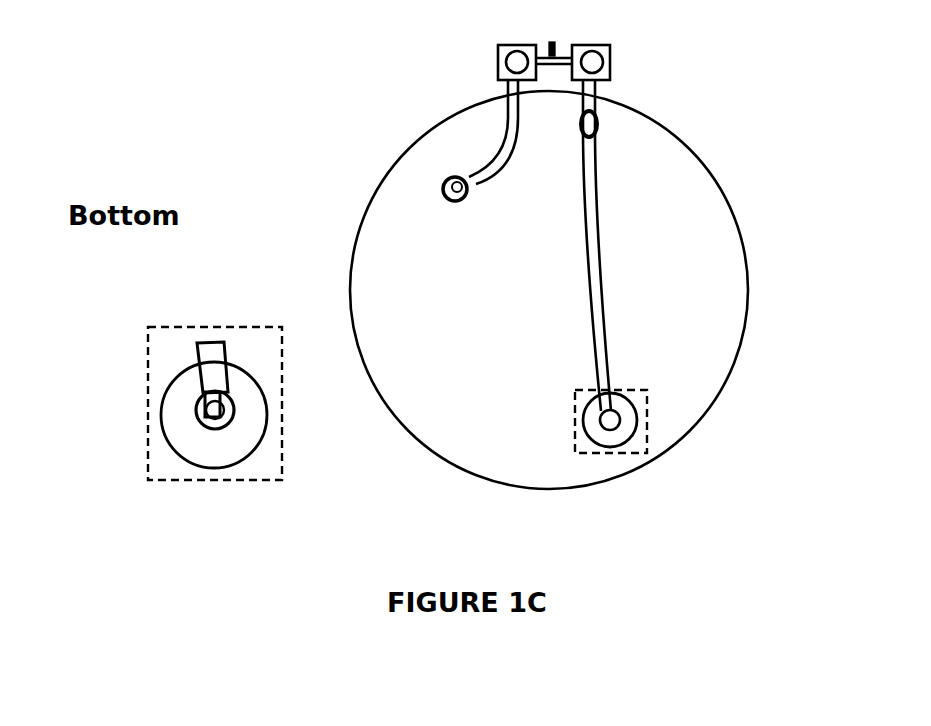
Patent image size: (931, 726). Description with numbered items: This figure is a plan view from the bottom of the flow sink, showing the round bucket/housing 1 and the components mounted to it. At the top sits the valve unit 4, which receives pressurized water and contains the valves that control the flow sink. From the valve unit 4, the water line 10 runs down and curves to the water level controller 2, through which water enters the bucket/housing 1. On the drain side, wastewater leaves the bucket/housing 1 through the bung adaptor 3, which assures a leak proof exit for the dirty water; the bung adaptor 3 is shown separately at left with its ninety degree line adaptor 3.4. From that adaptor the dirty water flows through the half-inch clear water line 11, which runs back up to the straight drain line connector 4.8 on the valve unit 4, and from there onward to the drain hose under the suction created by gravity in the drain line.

The bucket/housing 1 is at (712, 422).
The water level controller 2 is at (428, 185).
The bung adaptor 3 is at (245, 458).
The 90 degree line adaptor 3.4 is at (191, 377).
The valve unit 4 is at (624, 62).
The straight drain line connector 4.8 is at (613, 125).
The water line 10 is at (480, 146).
The clear water line 11 is at (607, 272).